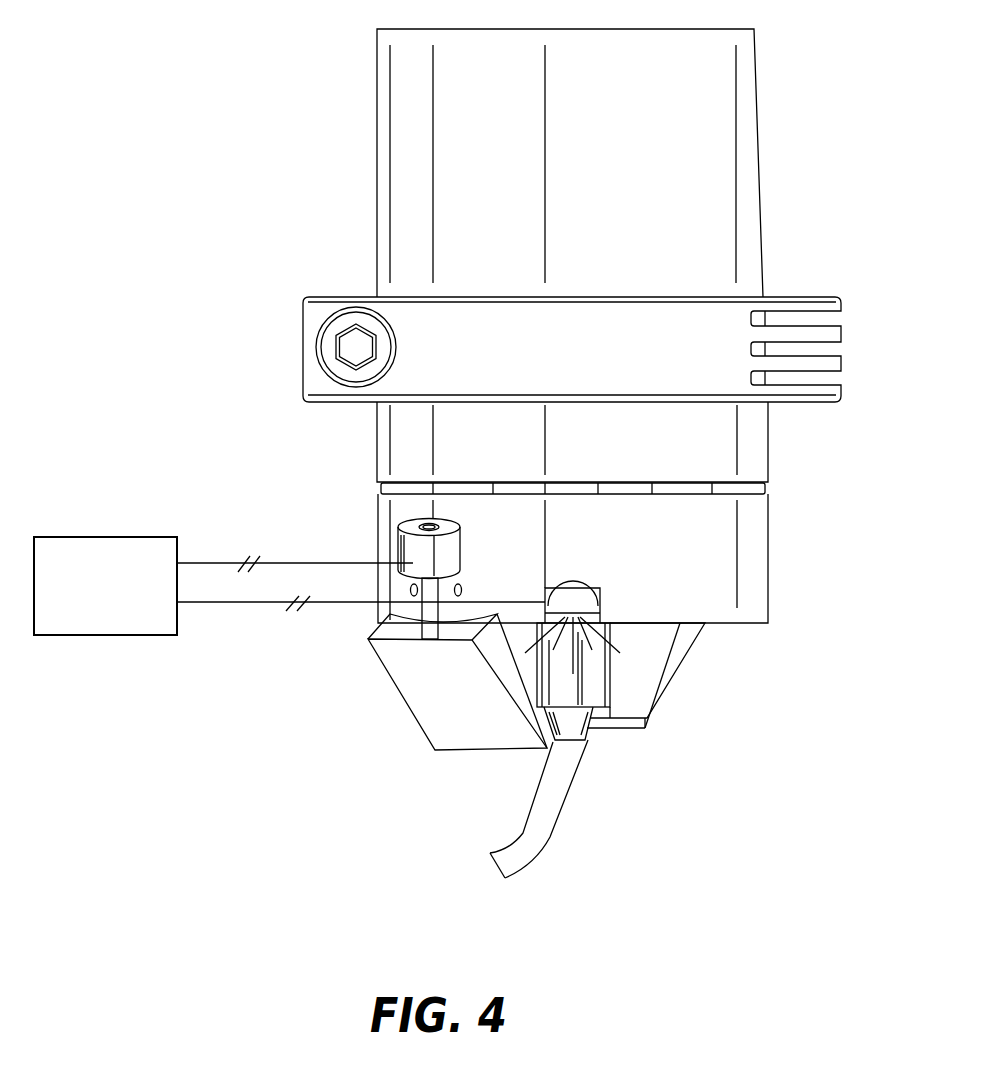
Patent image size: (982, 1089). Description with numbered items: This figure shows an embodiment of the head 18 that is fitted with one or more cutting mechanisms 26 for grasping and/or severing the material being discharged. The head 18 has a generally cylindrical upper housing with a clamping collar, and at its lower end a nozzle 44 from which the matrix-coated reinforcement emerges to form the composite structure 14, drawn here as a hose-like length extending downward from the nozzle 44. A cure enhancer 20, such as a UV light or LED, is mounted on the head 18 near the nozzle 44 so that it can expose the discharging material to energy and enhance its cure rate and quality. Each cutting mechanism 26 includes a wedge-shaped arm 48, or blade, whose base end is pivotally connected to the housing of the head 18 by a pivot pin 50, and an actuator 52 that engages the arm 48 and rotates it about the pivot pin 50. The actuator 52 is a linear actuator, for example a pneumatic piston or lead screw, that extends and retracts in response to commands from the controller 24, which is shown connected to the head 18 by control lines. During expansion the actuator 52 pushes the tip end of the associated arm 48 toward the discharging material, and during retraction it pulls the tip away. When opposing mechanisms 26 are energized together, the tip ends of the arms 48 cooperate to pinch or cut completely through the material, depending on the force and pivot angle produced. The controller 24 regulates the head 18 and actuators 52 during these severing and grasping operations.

The head 18 is at (188, 77).
The controller 24 is at (96, 609).
The actuator 52 is at (453, 557).
The pivot pin 50 is at (463, 590).
The cure enhancer 20 is at (588, 601).
The cutting mechanism 26 is at (324, 695).
The wedge-shaped arm 48 is at (465, 707).
The nozzle 44 is at (584, 737).
The composite structure 14 is at (557, 803).